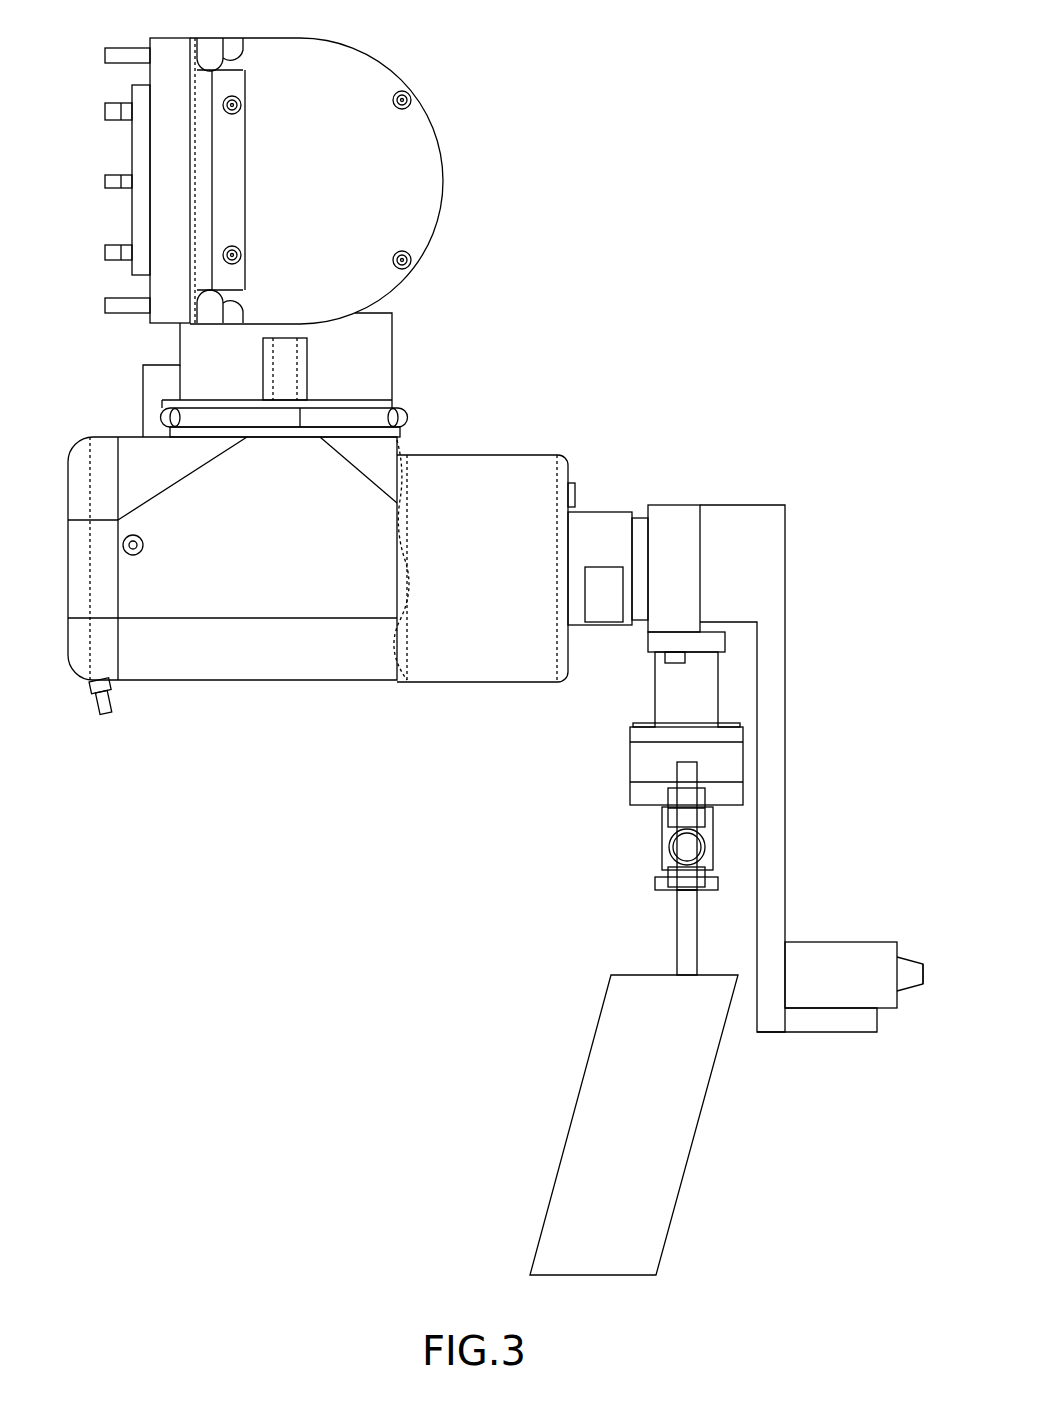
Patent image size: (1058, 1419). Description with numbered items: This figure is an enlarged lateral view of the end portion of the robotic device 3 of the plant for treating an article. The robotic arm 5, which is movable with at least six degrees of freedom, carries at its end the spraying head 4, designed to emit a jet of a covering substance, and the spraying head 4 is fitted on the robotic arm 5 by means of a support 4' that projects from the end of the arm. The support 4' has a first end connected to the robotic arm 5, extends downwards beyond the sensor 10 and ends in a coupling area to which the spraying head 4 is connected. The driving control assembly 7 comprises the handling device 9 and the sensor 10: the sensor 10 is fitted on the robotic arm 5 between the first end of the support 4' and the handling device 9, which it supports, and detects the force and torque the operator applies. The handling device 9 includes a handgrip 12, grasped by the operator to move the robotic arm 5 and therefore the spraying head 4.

The robotic device 3 is at (527, 181).
The robotic arm 5 is at (458, 468).
The support 4' is at (762, 744).
The spraying head 4 is at (854, 922).
The sensor 10 is at (643, 762).
The handling device 9 is at (621, 917).
The driving control assembly 7 is at (497, 984).
The handgrip 12 is at (674, 1134).